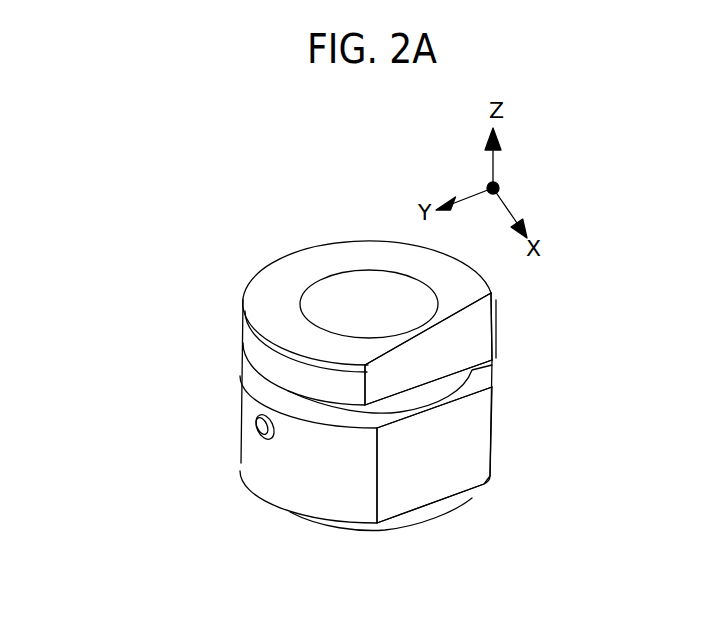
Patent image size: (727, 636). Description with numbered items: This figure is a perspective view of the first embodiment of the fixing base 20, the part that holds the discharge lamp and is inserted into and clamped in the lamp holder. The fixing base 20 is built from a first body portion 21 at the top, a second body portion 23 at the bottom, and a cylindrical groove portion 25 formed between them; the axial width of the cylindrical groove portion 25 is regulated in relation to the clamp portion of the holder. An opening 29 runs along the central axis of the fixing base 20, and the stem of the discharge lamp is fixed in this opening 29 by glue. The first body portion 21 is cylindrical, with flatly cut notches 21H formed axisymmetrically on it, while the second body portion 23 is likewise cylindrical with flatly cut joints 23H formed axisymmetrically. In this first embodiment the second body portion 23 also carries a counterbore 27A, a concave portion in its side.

The fixing base 20 is at (128, 242).
The first body portion 21 is at (492, 345).
The notch 21H is at (458, 344).
The second body portion 23 is at (495, 438).
The joint 23H is at (445, 465).
The cylindrical groove portion 25 is at (435, 393).
The counterbore 27A is at (258, 429).
The opening 29 is at (322, 277).